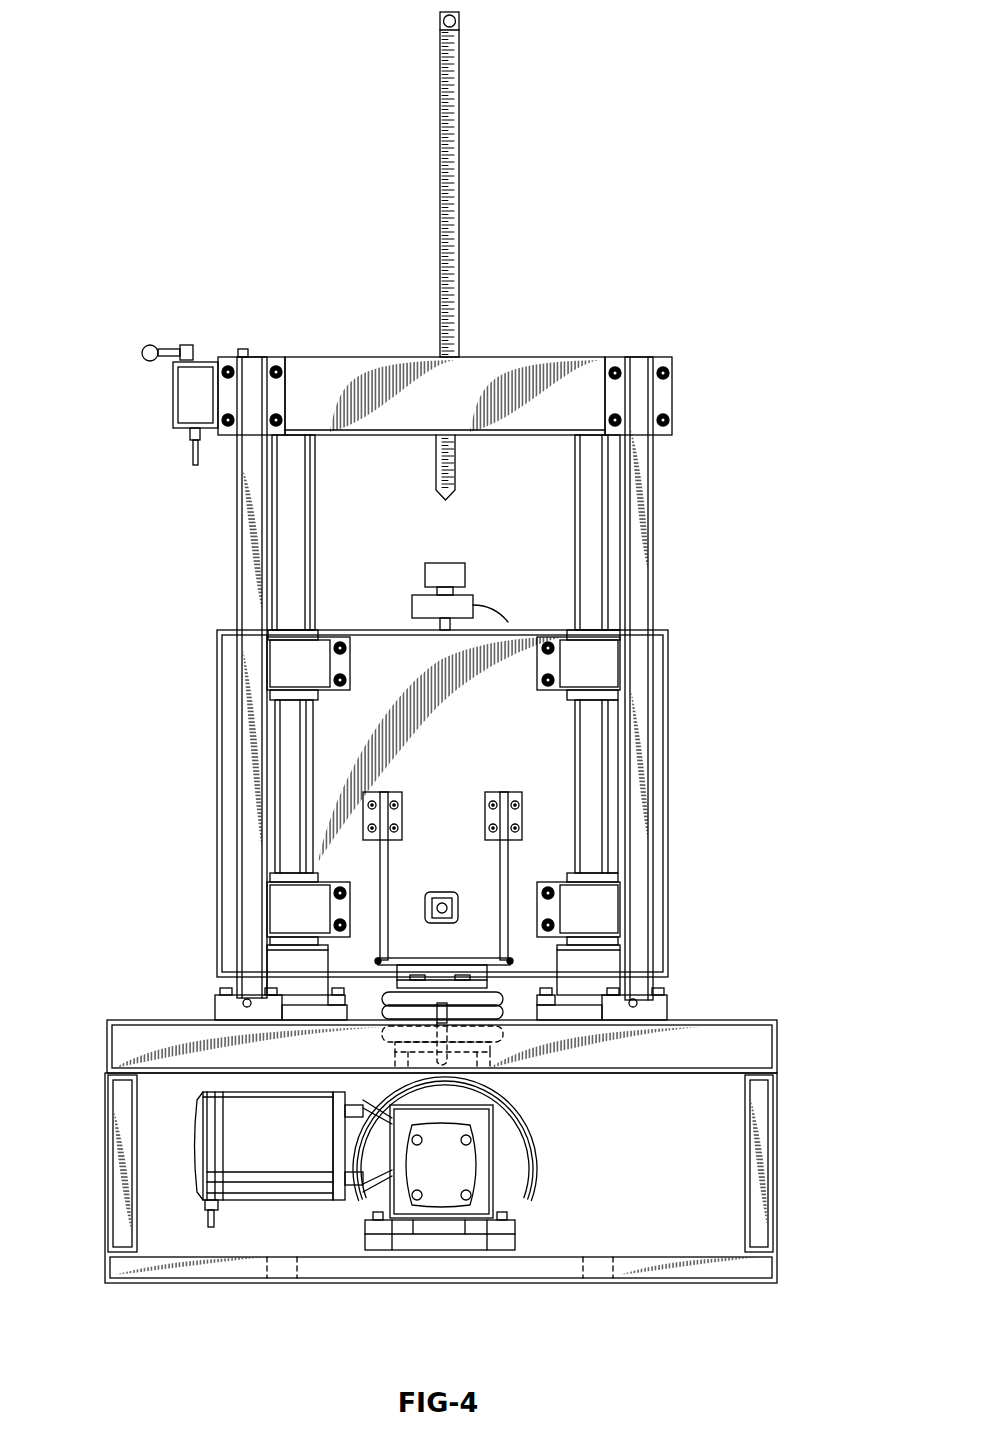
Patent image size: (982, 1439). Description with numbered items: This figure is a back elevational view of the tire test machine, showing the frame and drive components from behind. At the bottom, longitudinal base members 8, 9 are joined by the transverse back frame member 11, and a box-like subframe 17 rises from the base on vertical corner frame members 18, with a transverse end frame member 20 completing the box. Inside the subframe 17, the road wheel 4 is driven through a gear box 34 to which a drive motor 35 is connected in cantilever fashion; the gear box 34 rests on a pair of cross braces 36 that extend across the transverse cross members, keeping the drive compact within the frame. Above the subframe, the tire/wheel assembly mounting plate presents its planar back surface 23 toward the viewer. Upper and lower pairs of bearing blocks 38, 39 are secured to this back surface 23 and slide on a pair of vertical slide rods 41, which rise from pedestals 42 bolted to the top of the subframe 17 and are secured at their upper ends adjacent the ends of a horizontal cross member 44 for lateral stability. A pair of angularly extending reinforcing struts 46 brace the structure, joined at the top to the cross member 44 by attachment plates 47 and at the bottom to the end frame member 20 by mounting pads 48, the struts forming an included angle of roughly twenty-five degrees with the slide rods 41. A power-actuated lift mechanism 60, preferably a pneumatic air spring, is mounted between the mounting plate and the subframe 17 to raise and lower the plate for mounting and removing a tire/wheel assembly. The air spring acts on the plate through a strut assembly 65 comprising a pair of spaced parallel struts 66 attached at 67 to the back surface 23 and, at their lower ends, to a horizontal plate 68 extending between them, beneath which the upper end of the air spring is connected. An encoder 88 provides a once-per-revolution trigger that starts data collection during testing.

The road wheel 4 is at (548, 1148).
The longitudinal base member 8 is at (290, 1278).
The longitudinal base member 9 is at (598, 1280).
The back frame member 11 is at (195, 1270).
The subframe 17 is at (785, 1120).
The corner frame member 18 is at (125, 1200).
The end frame member 20 is at (765, 1048).
The back surface 23 is at (386, 665).
The gear box 34 is at (483, 1125).
The drive motor 35 is at (270, 1203).
The cross brace 36 is at (383, 1250).
The upper bearing block 38 is at (288, 660).
The lower bearing block 39 is at (288, 905).
The slide rod 41 is at (315, 518).
The pedestal 42 is at (603, 967).
The horizontal cross member 44 is at (340, 368).
The reinforcing strut 46 is at (250, 770).
The attachment plate 47 is at (672, 390).
The mounting pad 48 is at (665, 1003).
The lift mechanism 60 is at (380, 1022).
The strut assembly 65 is at (400, 952).
The strut 66 is at (507, 865).
The attachment point 67 is at (512, 793).
The horizontal plate 68 is at (470, 950).
The encoder 88 is at (443, 892).